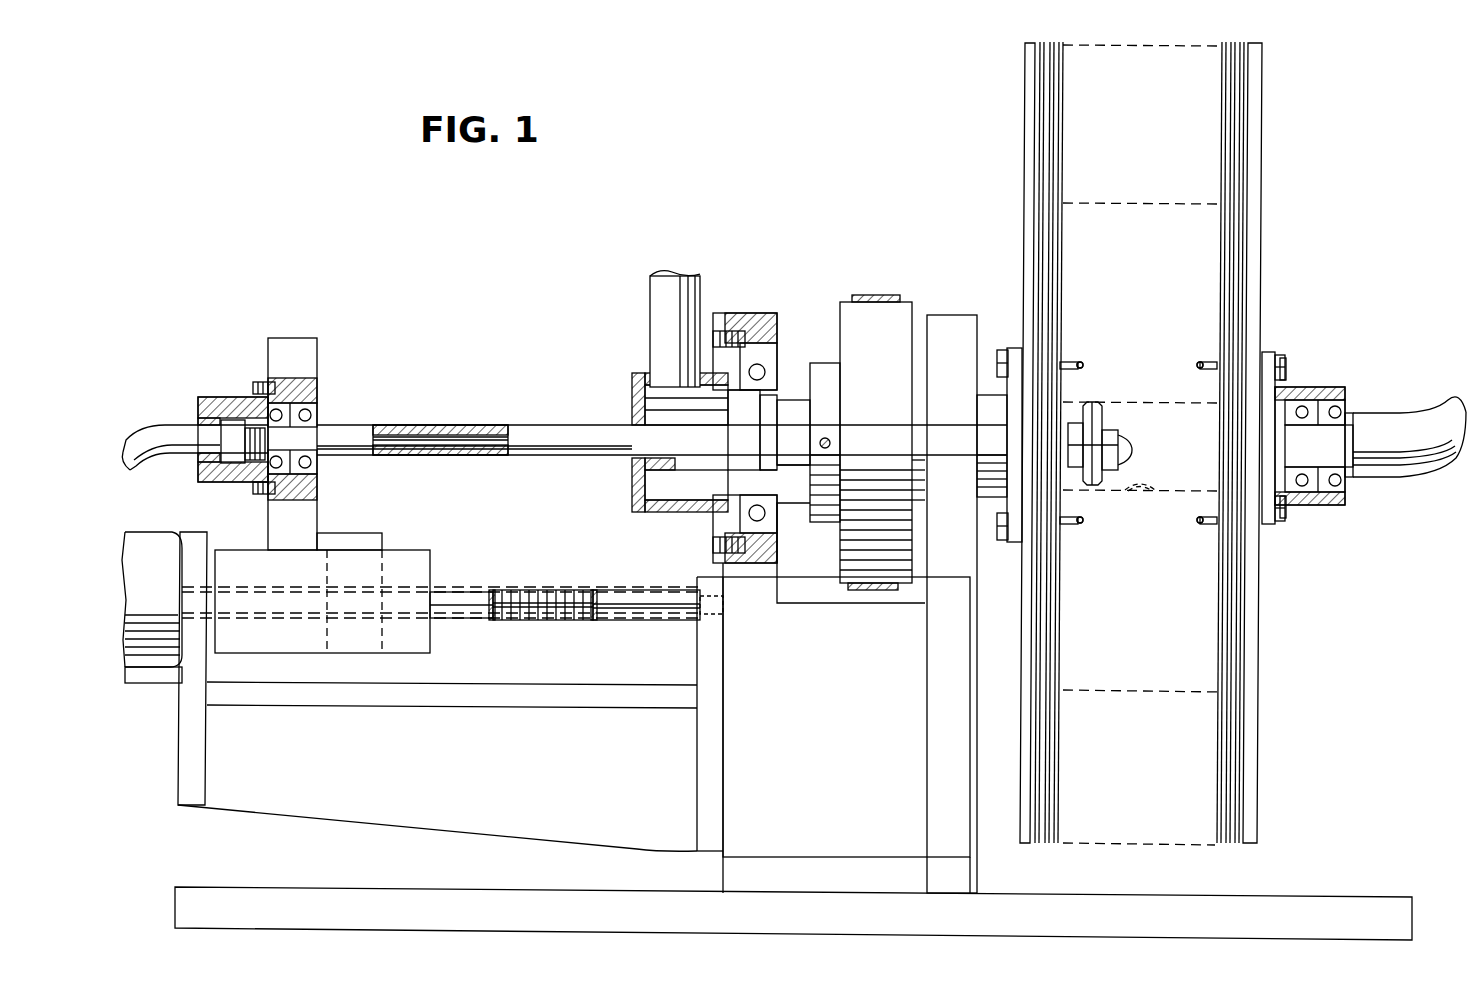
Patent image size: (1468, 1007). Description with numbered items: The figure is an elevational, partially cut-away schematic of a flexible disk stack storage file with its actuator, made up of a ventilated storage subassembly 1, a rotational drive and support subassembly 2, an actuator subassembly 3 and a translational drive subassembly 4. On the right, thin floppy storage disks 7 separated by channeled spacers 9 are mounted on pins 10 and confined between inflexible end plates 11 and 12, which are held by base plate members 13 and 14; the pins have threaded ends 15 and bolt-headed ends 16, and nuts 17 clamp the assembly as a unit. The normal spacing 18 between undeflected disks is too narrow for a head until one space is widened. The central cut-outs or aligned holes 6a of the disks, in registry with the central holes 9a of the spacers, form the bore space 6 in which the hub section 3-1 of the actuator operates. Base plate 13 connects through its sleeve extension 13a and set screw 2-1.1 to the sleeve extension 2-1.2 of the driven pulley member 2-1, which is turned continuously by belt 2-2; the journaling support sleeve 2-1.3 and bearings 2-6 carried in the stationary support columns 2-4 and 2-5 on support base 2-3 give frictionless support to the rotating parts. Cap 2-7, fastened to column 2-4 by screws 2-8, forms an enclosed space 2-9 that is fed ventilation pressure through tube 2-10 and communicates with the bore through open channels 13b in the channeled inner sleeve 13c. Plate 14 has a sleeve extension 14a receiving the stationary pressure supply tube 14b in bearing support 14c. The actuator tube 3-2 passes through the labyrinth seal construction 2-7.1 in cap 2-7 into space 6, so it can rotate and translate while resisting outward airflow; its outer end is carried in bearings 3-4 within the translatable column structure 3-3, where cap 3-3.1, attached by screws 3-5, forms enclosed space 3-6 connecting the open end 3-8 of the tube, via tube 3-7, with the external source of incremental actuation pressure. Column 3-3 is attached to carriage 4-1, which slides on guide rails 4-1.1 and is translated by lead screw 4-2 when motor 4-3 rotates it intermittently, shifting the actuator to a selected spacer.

The ventilated storage subassembly 1 is at (1305, 206).
The rotational drive and support subassembly 2 is at (876, 244).
The driven pulley member 2-1 is at (846, 310).
The set screw 2-1.1 is at (830, 444).
The sleeve extension 2-1.2 is at (826, 525).
The journaling support sleeve 2-1.3 is at (915, 402).
The belt 2-2 is at (876, 295).
The support base 2-3 is at (860, 727).
The support column 2-4 is at (752, 313).
The support column 2-5 is at (950, 315).
The bearings 2-6 is at (765, 366).
The cap 2-7 is at (633, 376).
The labyrinth seal construction 2-7.1 is at (630, 460).
The screws 2-8 is at (716, 332).
The enclosed space 2-9 is at (712, 492).
The tube 2-10 is at (658, 288).
The actuator subassembly 3 is at (452, 398).
The hub section 3-1 is at (1108, 402).
The tube 3-2 is at (438, 425).
The translatable column structure 3-3 is at (300, 338).
The cap 3-3.1 is at (215, 397).
The bearings 3-4 is at (313, 396).
The screws 3-5 is at (256, 380).
The enclosed space 3-6 is at (232, 462).
The tube 3-7 is at (148, 462).
The open end 3-8 is at (243, 440).
The translational drive subassembly 4 is at (518, 574).
The carriage 4-1 is at (398, 550).
The guide rails 4-1.1 is at (466, 620).
The lead screw 4-2 is at (536, 620).
The motor 4-3 is at (168, 680).
The bore space 6 is at (1176, 452).
The aligned holes 6a is at (1143, 494).
The central holes 9a is at (1140, 489).
The storage disks 7 is at (1062, 82).
The channeled spacers 9 is at (1066, 382).
The pins 10 is at (1203, 358).
The end plate 11 is at (1025, 166).
The end plate 12 is at (1262, 152).
The base plate member 13 is at (1014, 545).
The sleeve extension 13a is at (778, 400).
The open channels 13b is at (748, 440).
The channeled inner sleeve 13c is at (750, 463).
The base plate member 14 is at (1268, 352).
The sleeve extension 14a is at (1325, 387).
The stationary pressure supply tube 14b is at (1410, 478).
The bearing support 14c is at (1340, 412).
The threaded ends 15 is at (1288, 368).
The bolt-headed ends 16 is at (1002, 348).
The nuts 17 is at (1284, 360).
The normal spacing 18 is at (1050, 40).